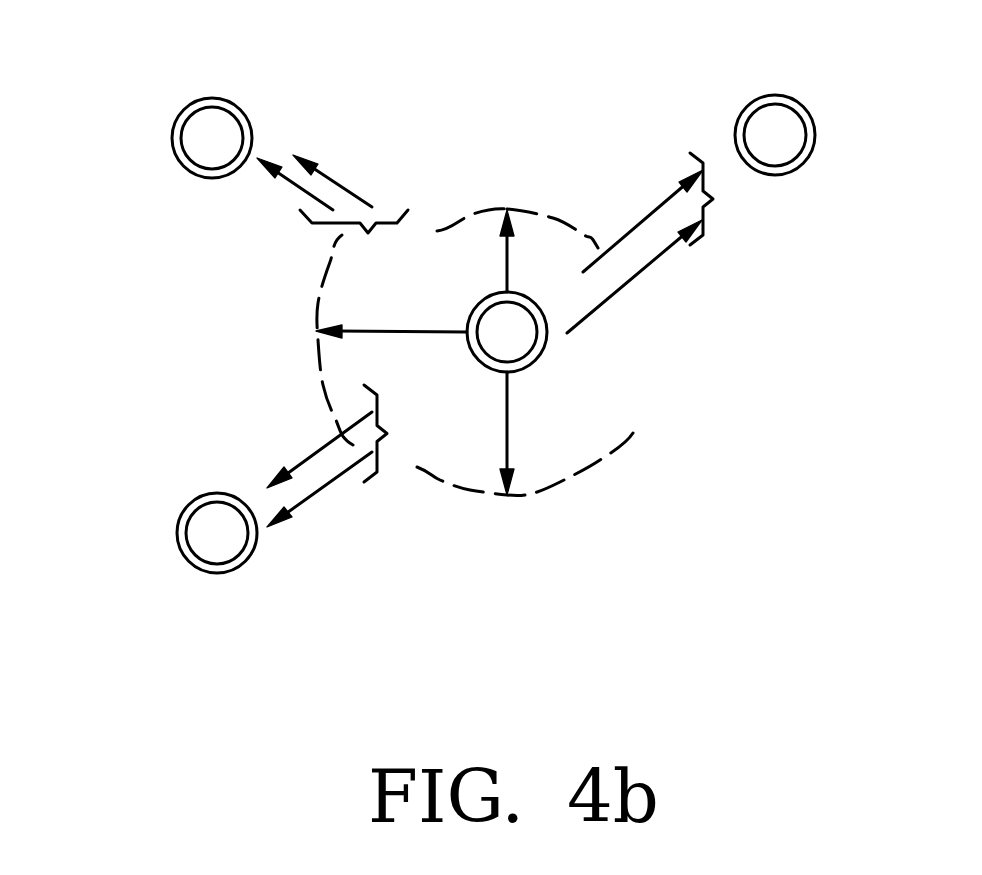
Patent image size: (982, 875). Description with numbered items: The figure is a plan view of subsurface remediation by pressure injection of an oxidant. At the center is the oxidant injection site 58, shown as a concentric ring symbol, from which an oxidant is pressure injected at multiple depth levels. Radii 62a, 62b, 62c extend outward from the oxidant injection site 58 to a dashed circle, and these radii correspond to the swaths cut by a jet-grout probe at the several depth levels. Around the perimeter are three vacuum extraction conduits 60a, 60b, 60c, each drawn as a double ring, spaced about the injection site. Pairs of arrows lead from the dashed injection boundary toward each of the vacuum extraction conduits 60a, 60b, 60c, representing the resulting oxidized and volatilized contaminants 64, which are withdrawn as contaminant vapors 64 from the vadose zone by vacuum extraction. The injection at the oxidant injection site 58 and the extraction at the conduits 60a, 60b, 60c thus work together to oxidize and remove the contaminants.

The oxidant injection site 58 is at (563, 370).
The vacuum extraction conduit 60a is at (814, 84).
The vacuum extraction conduit 60b is at (149, 126).
The vacuum extraction conduit 60c is at (154, 525).
The radius 62a is at (500, 191).
The radius 62b is at (540, 513).
The radius 62c is at (298, 346).
The oxidized and volatilized contaminants 64 is at (516, 340).